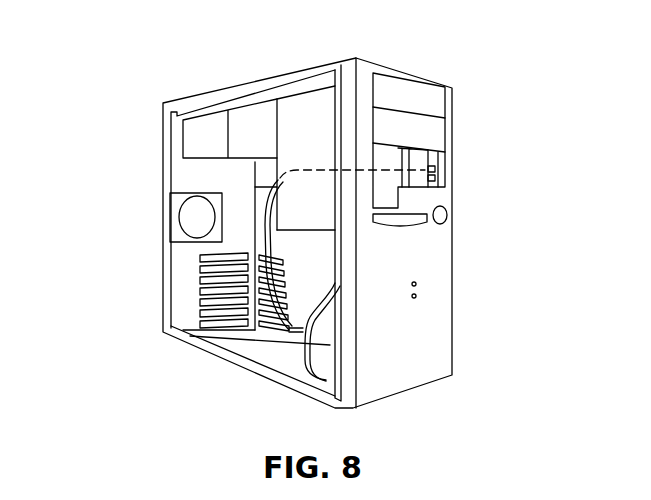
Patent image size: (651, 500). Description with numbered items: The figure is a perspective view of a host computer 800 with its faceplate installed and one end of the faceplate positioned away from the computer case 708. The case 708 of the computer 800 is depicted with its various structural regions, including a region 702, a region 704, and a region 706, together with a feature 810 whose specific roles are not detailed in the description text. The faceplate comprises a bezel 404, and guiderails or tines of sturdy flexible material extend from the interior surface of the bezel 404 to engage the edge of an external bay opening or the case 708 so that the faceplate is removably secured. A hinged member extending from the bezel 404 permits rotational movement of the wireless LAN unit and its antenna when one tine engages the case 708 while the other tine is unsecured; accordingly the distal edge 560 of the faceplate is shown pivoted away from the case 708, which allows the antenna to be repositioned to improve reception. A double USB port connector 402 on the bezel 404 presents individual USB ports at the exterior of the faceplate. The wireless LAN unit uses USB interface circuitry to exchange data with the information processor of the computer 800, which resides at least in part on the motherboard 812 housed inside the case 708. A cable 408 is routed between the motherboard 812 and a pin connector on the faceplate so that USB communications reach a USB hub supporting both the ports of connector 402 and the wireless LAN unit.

The computer 800 is at (480, 76).
The upper compartment 702 is at (308, 137).
The distal edge 560 is at (405, 168).
The double USB port connector 402 is at (436, 166).
The bezel 404 is at (413, 178).
The air duct hose 810 is at (373, 175).
The motherboard 812 is at (258, 213).
The cable 408 is at (258, 233).
The vent slots 706 is at (228, 288).
The bottom panel 704 is at (268, 357).
The computer case 708 is at (390, 343).